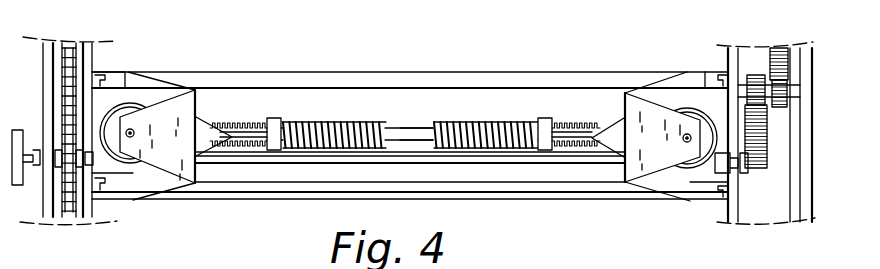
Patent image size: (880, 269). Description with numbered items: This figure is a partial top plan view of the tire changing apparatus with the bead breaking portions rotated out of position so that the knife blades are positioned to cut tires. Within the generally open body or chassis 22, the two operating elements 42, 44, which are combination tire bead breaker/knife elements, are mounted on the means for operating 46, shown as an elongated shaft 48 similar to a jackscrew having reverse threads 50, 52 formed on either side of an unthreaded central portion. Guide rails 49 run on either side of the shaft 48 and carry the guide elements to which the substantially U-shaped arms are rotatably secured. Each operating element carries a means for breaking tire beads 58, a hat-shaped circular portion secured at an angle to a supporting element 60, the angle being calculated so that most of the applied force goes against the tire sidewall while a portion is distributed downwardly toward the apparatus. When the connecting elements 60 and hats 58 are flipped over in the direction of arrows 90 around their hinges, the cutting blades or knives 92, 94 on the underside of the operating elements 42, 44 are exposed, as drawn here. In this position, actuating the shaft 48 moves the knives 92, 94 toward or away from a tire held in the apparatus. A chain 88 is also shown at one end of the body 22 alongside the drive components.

The body 22 is at (740, 40).
The operating element 42 is at (158, 204).
The operating element 44 is at (680, 208).
The means for operating 46 is at (419, 112).
The elongated shaft 48 is at (397, 129).
The guide rails 49 is at (465, 80).
The reverse thread 50 is at (307, 118).
The reverse thread 52 is at (495, 123).
The means for breaking tire beads 58 is at (130, 103).
The supporting element 60 is at (167, 160).
The drive chain 88 is at (67, 203).
The arrows 90 is at (127, 62).
The cutting blade 92 is at (202, 155).
The cutting blade 94 is at (608, 157).